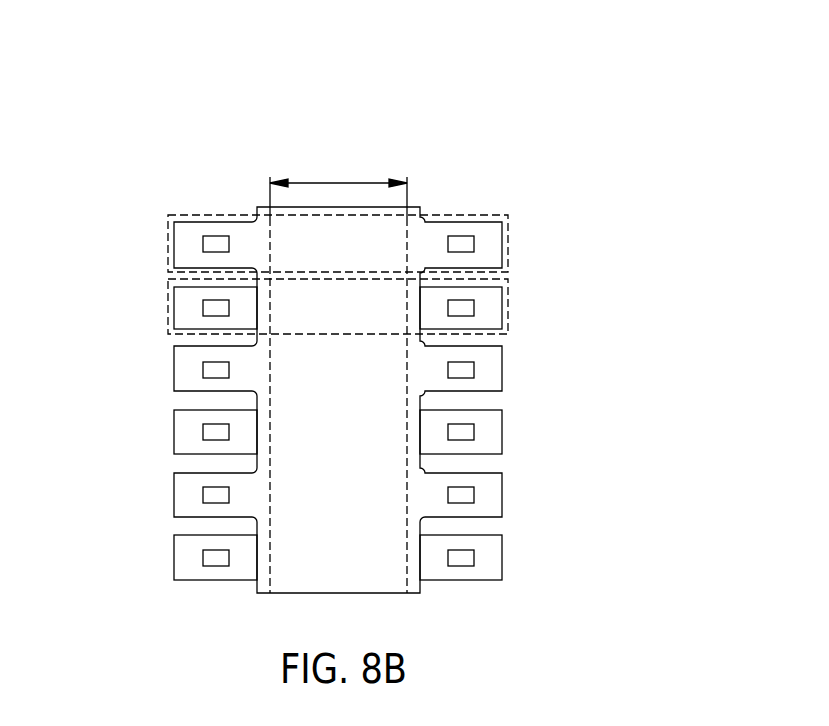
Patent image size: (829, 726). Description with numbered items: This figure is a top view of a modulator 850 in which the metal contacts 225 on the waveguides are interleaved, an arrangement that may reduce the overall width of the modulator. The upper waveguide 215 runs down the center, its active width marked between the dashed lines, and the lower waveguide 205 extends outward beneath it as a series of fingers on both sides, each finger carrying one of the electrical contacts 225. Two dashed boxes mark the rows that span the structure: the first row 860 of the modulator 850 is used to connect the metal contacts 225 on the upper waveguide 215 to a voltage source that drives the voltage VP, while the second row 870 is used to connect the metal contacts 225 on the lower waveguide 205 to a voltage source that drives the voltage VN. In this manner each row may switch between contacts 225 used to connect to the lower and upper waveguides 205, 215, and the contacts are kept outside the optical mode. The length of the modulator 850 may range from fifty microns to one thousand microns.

The lower waveguide 205 is at (174, 320).
The upper waveguide 215 is at (363, 254).
The electrical contacts 225 is at (188, 234).
The modulator 850 is at (575, 127).
The first row 860 is at (508, 242).
The second row 870 is at (508, 308).